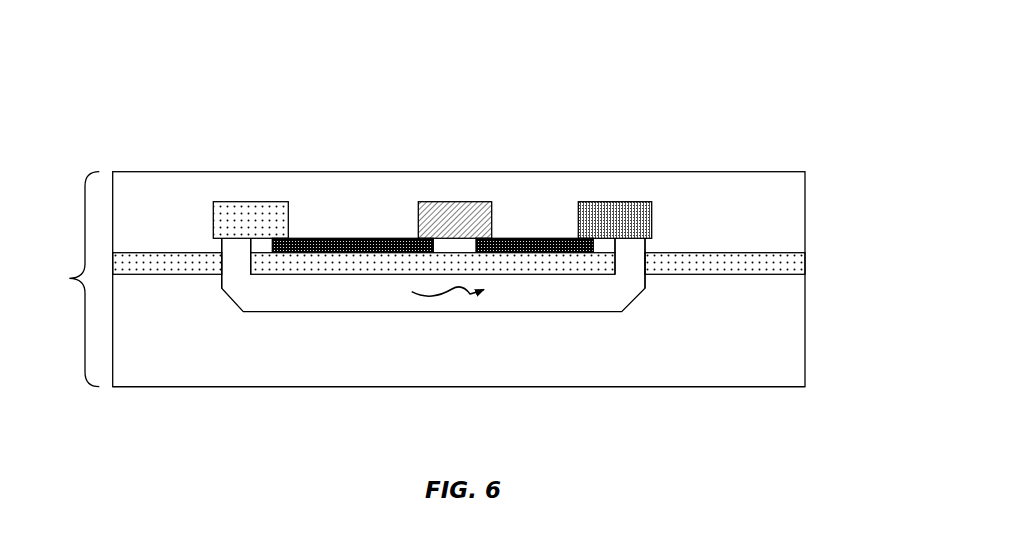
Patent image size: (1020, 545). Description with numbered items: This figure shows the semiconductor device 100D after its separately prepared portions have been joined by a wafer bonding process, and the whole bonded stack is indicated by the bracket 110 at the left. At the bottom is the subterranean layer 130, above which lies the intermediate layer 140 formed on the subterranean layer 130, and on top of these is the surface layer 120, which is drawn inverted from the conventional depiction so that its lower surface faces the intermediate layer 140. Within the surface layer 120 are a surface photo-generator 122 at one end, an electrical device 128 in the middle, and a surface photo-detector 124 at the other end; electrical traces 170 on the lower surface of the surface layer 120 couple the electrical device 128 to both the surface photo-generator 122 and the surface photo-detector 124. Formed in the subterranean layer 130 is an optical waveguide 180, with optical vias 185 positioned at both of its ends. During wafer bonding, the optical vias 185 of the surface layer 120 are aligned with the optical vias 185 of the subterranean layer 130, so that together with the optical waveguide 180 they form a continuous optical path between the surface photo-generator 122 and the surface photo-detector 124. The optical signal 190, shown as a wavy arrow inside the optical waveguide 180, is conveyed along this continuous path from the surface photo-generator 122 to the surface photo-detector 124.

The semiconductor device 100D is at (767, 52).
The substrate stack 110 is at (85, 177).
The surface layer 120 is at (805, 215).
The surface photo-generator 122 is at (243, 215).
The surface photo-detector 124 is at (623, 215).
The electrical device 128 is at (460, 215).
The subterranean layer 130 is at (805, 355).
The intermediate layer 140 is at (805, 267).
The electrical traces 170 is at (338, 239).
The optical waveguide 180 is at (332, 297).
The optical vias 185 is at (230, 266).
The optical signal 190 is at (462, 295).